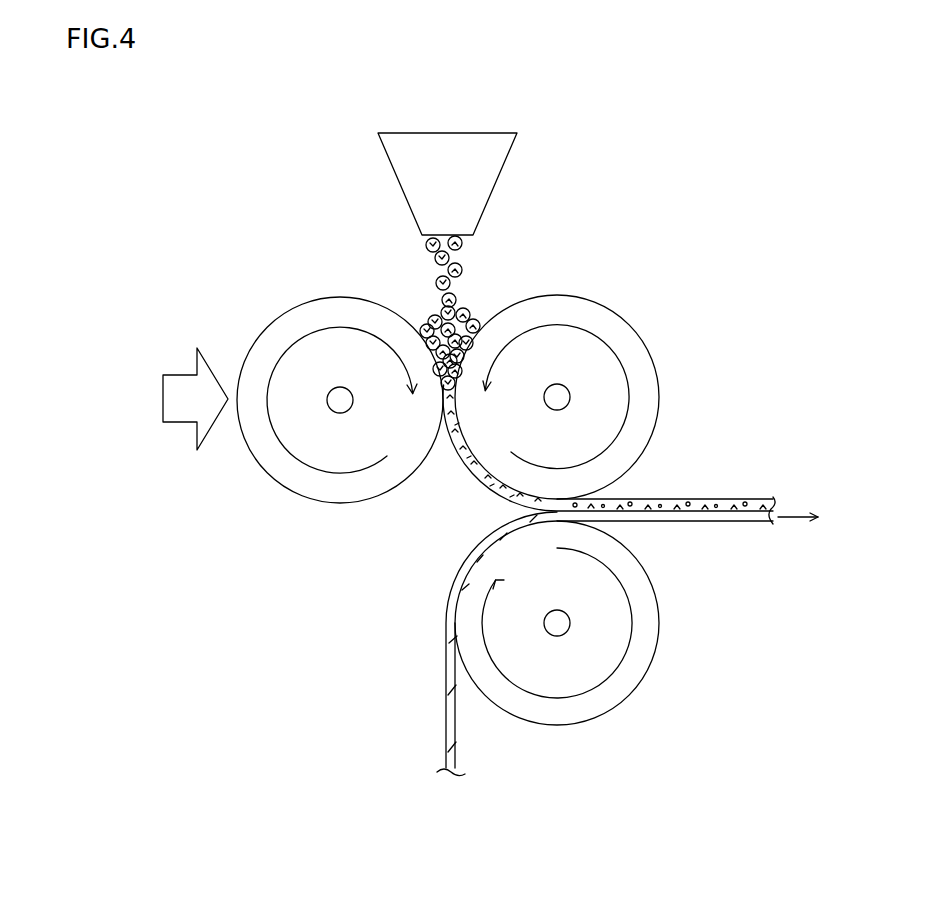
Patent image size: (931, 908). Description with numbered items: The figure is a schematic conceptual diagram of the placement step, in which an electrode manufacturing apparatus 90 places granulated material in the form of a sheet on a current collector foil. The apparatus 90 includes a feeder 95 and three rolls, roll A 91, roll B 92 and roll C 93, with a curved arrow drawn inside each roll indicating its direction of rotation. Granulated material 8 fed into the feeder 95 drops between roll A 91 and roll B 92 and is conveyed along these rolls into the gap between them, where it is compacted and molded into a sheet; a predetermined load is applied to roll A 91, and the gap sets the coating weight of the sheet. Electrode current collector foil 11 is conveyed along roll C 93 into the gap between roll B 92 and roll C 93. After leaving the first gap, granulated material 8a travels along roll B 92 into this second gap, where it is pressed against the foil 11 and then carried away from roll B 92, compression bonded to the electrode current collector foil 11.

The electrode manufacturing apparatus 90 is at (258, 118).
The roll A 91 is at (340, 308).
The roll B 92 is at (557, 308).
The roll C 93 is at (557, 722).
The feeder 95 is at (453, 143).
The granulated material 8 is at (473, 310).
The granulated material 8a is at (738, 500).
The electrode current collector foil 11 is at (447, 668).